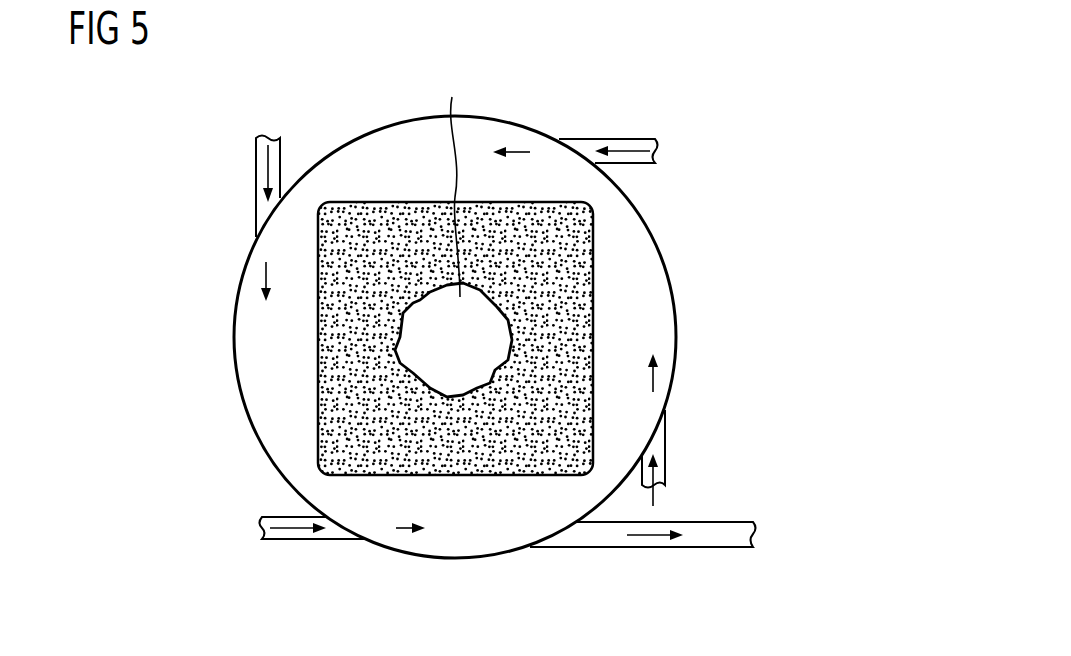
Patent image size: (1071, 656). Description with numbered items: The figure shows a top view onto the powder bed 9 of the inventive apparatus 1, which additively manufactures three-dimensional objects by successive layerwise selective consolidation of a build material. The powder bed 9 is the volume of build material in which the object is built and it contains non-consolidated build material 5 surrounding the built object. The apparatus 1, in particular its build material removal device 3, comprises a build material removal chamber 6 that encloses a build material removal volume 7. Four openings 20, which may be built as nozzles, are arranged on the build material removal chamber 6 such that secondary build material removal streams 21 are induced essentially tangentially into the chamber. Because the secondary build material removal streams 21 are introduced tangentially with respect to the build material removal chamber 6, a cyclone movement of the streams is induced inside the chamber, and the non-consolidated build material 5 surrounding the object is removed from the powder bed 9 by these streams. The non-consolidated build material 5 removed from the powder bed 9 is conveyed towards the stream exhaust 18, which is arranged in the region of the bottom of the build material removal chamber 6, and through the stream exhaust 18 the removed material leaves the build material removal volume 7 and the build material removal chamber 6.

The apparatus 1 is at (192, 550).
The build material removal device 3 is at (323, 90).
The non-consolidated build material 5 is at (410, 205).
The build material removal chamber 6 is at (250, 336).
The build material removal volume 7 is at (304, 408).
The powder bed 9 is at (481, 462).
The stream exhaust 18 is at (715, 548).
The openings 20 is at (257, 165).
The secondary build material removal streams 21 is at (527, 152).